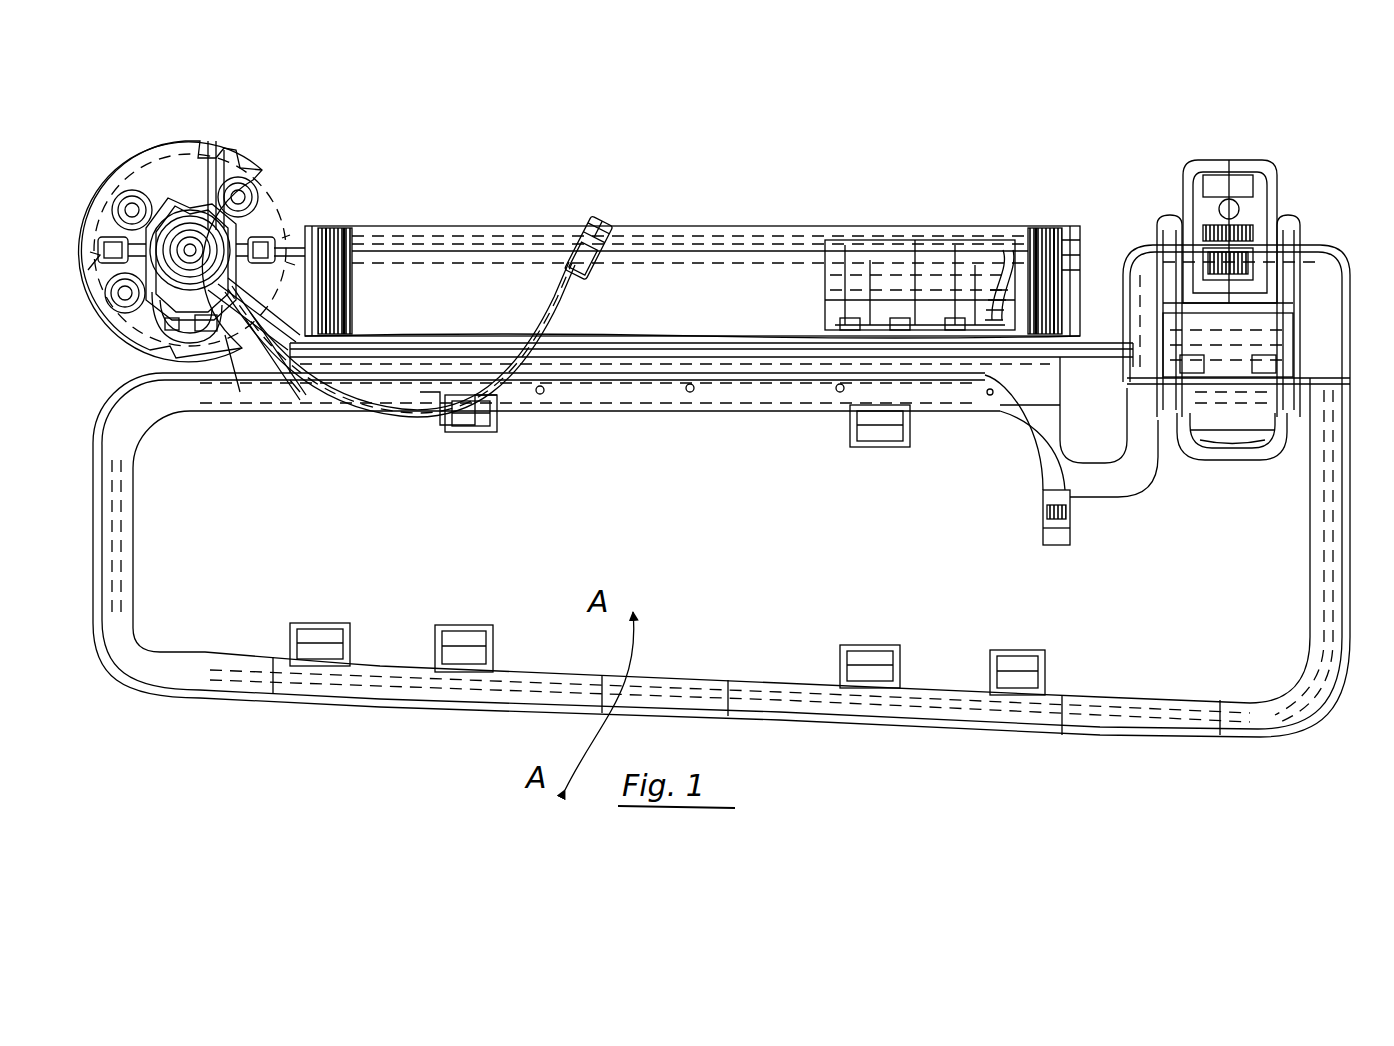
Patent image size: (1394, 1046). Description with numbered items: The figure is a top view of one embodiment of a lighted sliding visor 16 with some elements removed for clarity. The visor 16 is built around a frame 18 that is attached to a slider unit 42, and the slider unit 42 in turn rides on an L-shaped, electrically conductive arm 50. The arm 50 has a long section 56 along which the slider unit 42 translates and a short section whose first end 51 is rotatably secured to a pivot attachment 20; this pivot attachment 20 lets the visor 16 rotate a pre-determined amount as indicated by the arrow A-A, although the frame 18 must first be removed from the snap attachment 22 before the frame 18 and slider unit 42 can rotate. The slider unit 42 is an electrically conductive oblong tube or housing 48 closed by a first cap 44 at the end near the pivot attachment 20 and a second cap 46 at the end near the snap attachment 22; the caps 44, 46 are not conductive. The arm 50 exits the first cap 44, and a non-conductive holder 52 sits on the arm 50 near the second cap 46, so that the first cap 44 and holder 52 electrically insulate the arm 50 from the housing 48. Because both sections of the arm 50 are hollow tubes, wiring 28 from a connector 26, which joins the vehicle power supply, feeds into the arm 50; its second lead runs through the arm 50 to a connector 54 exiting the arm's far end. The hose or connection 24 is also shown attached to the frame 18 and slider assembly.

The lighted sliding visor 16 is at (495, 748).
The frame 18 is at (1215, 740).
The pivot attachment 20 is at (246, 165).
The snap attachment 22 is at (1268, 165).
The hose 24 is at (290, 380).
The connector 26 is at (585, 220).
The wiring 28 is at (428, 428).
The slider unit 42 is at (753, 198).
The first cap 44 is at (314, 214).
The second cap 46 is at (1088, 220).
The housing 48 is at (632, 367).
The arm 50 is at (658, 222).
The first end 51 is at (1002, 245).
The holder 52 is at (922, 232).
The connector 54 is at (1056, 265).
The long section 56 is at (696, 250).